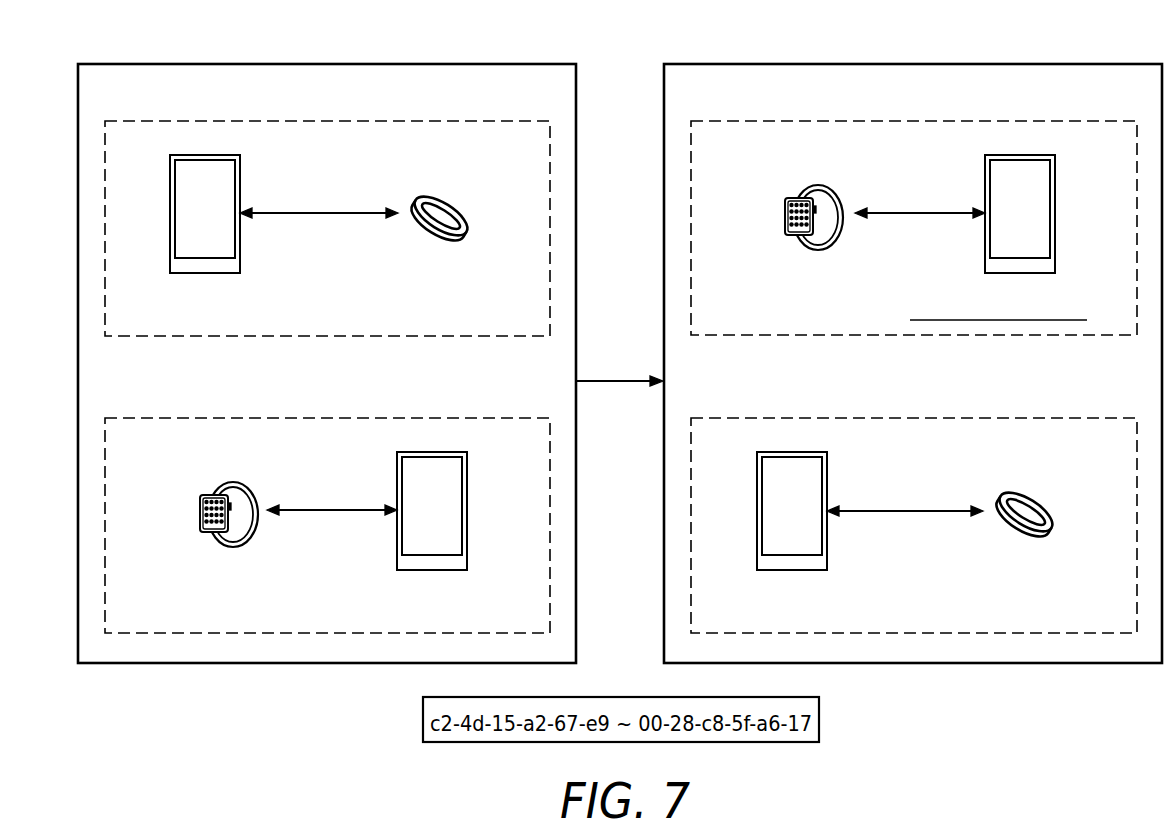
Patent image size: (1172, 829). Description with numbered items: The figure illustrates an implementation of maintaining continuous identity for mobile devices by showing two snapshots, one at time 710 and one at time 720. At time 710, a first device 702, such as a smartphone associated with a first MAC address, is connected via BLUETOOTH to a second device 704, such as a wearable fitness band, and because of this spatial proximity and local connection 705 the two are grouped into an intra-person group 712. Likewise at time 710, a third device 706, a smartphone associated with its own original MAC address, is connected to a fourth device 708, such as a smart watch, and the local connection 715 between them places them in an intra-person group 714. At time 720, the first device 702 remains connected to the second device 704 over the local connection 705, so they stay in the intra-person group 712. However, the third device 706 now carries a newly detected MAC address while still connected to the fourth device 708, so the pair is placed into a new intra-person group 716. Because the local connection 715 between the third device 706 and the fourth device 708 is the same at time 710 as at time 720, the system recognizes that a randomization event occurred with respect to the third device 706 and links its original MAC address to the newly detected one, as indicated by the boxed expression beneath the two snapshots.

The time 710 is at (373, 64).
The time 720 is at (958, 64).
The intra-person group 712 is at (477, 121).
The intra-person group 714 is at (480, 418).
The new intra-person group 716 is at (1065, 418).
The first device 702 is at (205, 155).
The second device 704 is at (438, 196).
The local connection 705 is at (305, 213).
The third device 706 is at (433, 452).
The fourth device 708 is at (230, 484).
The local connection 715 is at (315, 510).